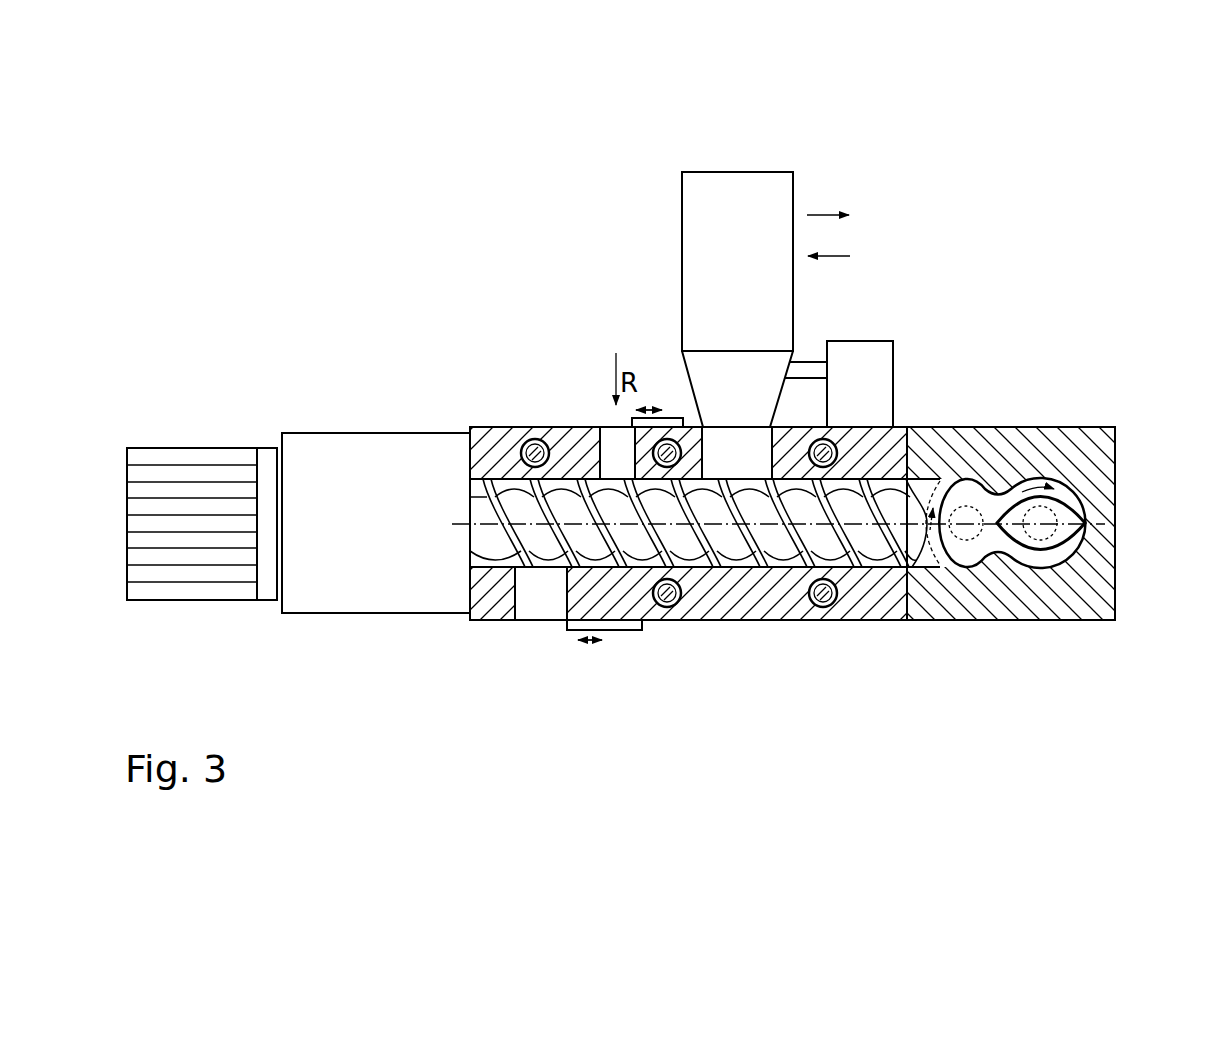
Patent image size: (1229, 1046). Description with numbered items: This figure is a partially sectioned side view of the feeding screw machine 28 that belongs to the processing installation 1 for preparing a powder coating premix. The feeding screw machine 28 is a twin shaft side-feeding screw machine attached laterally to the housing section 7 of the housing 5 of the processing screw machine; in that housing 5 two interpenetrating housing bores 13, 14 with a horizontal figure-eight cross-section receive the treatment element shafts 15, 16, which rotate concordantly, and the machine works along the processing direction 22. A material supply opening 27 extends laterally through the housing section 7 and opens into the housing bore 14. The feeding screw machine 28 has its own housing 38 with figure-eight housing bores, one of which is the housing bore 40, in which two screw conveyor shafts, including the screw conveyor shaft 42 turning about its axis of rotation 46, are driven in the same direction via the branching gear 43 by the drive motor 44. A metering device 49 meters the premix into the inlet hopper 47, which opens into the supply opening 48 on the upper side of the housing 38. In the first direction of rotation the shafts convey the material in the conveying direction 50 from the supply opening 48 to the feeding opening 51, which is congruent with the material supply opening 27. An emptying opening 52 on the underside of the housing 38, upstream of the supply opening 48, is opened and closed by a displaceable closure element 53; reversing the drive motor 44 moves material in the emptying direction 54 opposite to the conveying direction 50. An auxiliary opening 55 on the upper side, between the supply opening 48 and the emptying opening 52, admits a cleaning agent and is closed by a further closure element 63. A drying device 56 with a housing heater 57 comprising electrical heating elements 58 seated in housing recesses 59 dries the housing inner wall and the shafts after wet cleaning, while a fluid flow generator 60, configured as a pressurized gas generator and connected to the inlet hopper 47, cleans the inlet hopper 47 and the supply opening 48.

The processing installation 1 is at (609, 190).
The housing 5 is at (1059, 425).
The housing section 7 is at (998, 437).
The housing bore 13 is at (1068, 492).
The housing bore 14 is at (937, 480).
The treatment element shaft 15 is at (1075, 556).
The treatment element shaft 16 is at (1015, 585).
The processing direction 22 is at (1146, 358).
The material supply opening 27 is at (975, 585).
The feeding screw machine 28 is at (295, 308).
The housing 38 is at (480, 427).
The housing bore 40 is at (784, 587).
The screw conveyor shaft 42 is at (712, 540).
The branching gear 43 is at (383, 603).
The drive motor 44 is at (194, 583).
The axis of rotation 46 is at (465, 527).
The inlet hopper 47 is at (688, 373).
The supply opening 48 is at (738, 458).
The metering device 49 is at (731, 182).
The conveying direction 50 is at (830, 213).
The feeding opening 51 is at (940, 585).
The emptying opening 52 is at (530, 610).
The closure element 53 is at (567, 625).
The emptying direction 54 is at (830, 256).
The auxiliary opening 55 is at (607, 427).
The drying device 56 is at (527, 400).
The housing heater 57 is at (648, 613).
The heating element 58 is at (523, 440).
The housing recess 59 is at (507, 427).
The fluid flow generator 60 is at (877, 350).
The closure element 63 is at (670, 417).